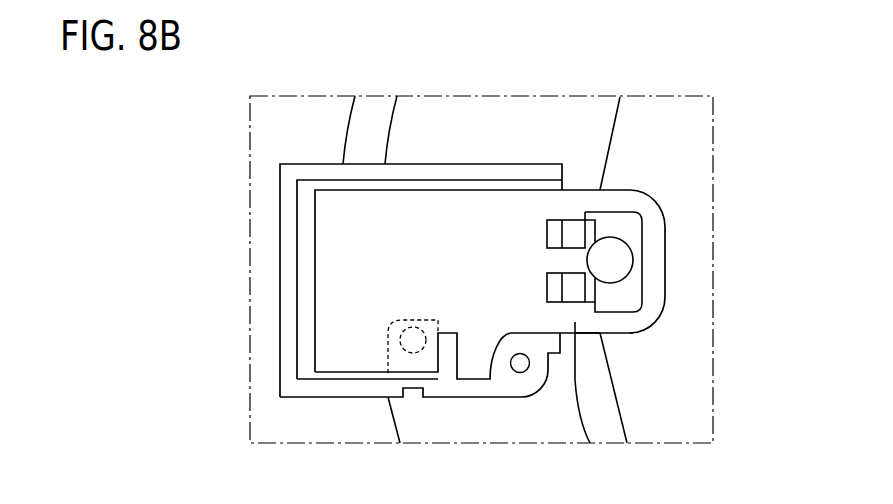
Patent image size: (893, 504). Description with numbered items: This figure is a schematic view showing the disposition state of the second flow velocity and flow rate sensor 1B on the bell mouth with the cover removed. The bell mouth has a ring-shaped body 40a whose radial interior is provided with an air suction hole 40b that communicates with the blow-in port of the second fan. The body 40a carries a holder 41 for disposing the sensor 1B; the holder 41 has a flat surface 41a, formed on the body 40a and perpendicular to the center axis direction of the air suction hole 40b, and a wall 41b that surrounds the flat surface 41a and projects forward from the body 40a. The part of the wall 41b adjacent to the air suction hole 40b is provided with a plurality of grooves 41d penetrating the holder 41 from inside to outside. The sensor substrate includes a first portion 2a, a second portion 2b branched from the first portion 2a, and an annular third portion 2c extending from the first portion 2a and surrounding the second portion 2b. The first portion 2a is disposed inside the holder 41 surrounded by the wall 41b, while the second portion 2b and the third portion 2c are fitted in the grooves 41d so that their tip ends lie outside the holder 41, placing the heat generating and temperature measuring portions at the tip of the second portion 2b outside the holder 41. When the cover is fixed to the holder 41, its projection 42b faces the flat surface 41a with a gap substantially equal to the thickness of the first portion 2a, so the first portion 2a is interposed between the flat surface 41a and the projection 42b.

The holder 41 is at (325, 157).
The wall 41b is at (288, 255).
The first portion 2a is at (347, 300).
The grooves 41d is at (553, 270).
The flat surface 41a is at (390, 345).
The projection 42b is at (421, 352).
The body 40a is at (508, 107).
The air suction hole 40b is at (607, 372).
The second flow velocity and flow rate sensor 1B is at (667, 237).
The second portion 2b is at (570, 258).
The third portion 2c is at (588, 443).